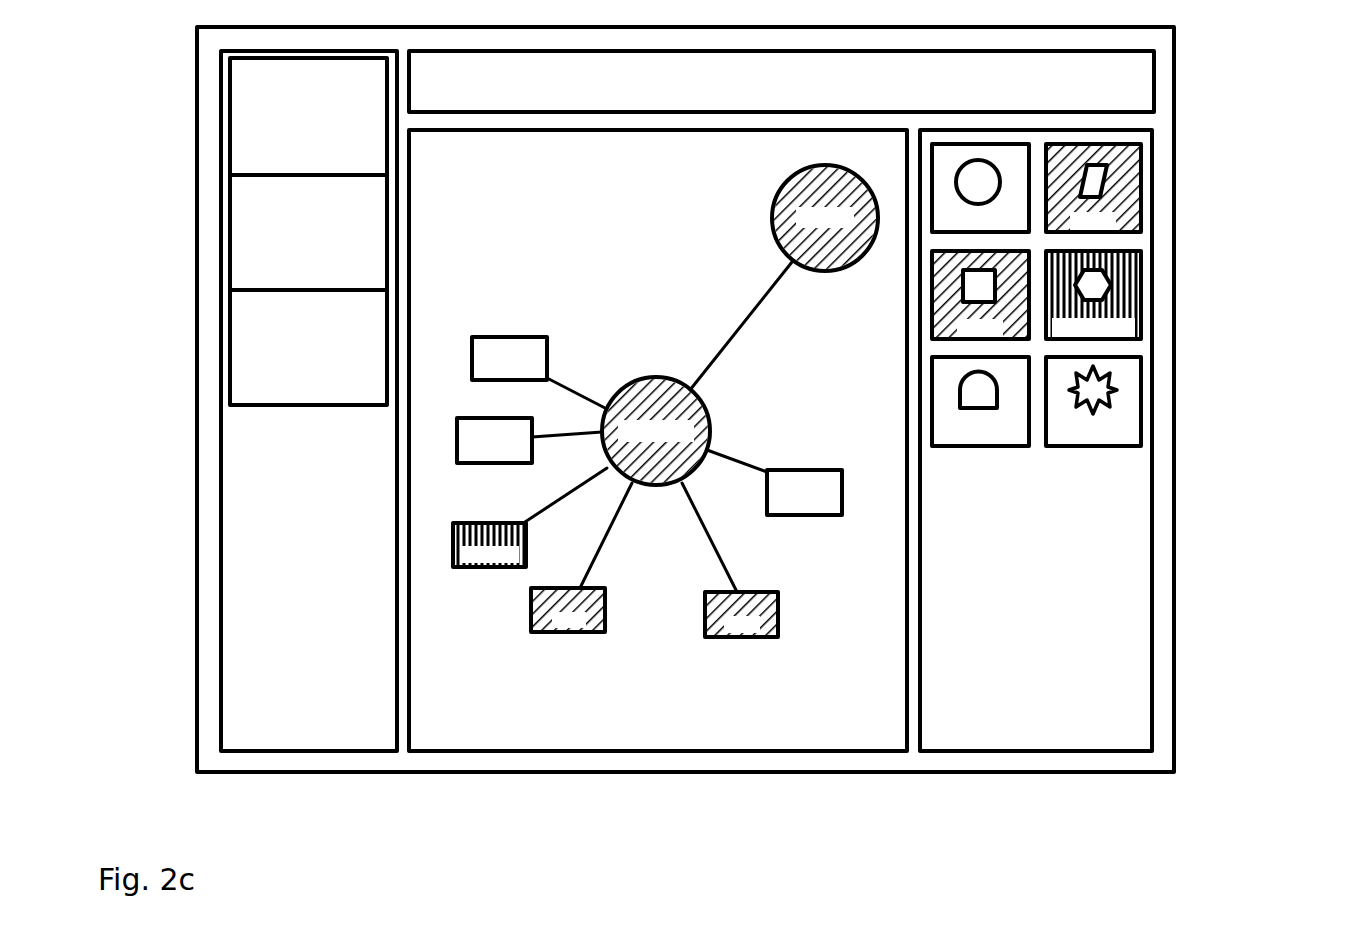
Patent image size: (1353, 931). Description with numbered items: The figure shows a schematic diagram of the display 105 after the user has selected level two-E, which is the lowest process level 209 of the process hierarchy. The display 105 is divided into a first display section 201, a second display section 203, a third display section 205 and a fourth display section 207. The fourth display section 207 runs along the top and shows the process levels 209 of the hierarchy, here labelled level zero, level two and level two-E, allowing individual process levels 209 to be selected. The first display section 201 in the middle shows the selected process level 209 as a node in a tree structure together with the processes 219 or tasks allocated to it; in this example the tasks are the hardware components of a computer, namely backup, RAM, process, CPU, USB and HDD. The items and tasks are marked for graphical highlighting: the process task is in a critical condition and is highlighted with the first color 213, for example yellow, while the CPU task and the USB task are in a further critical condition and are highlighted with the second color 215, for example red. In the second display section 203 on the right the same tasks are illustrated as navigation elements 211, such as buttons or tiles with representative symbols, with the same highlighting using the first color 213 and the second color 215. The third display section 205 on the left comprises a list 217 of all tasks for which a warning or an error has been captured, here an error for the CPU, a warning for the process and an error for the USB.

The display 105 is at (1222, 742).
The first display section 201 is at (752, 753).
The second display section 203 is at (1047, 753).
The third display section 205 is at (373, 753).
The fourth display section 207 is at (1154, 85).
The process level 209 is at (772, 217).
The navigation element 211 is at (1141, 202).
The first color 213 is at (453, 537).
The second color 215 is at (783, 252).
The list 217 is at (223, 117).
The process 219 is at (510, 337).